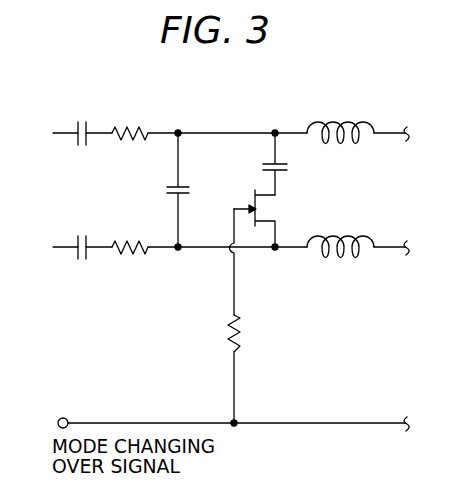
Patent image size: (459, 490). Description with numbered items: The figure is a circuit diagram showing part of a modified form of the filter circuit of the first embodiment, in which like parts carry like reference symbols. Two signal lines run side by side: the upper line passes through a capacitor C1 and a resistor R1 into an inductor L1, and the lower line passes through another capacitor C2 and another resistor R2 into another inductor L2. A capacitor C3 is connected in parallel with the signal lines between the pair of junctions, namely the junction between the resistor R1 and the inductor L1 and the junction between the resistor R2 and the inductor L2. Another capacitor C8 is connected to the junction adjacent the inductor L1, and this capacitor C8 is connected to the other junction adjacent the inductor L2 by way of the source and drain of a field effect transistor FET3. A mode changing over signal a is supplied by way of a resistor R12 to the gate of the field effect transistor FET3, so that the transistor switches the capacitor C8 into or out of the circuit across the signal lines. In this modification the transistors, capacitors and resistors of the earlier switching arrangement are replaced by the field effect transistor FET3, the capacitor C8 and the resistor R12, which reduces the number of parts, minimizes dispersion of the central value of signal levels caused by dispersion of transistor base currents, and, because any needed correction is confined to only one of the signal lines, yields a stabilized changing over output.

The capacitor C1 is at (79, 121).
The resistor R1 is at (130, 119).
The capacitor C2 is at (79, 236).
The resistor R2 is at (130, 234).
The capacitor C3 is at (191, 190).
The capacitor C8 is at (261, 164).
The field effect transistor FET3 is at (280, 252).
The inductor L1 is at (340, 118).
The inductor L2 is at (340, 260).
The resistor R12 is at (252, 369).
The mode changing over signal a is at (41, 421).